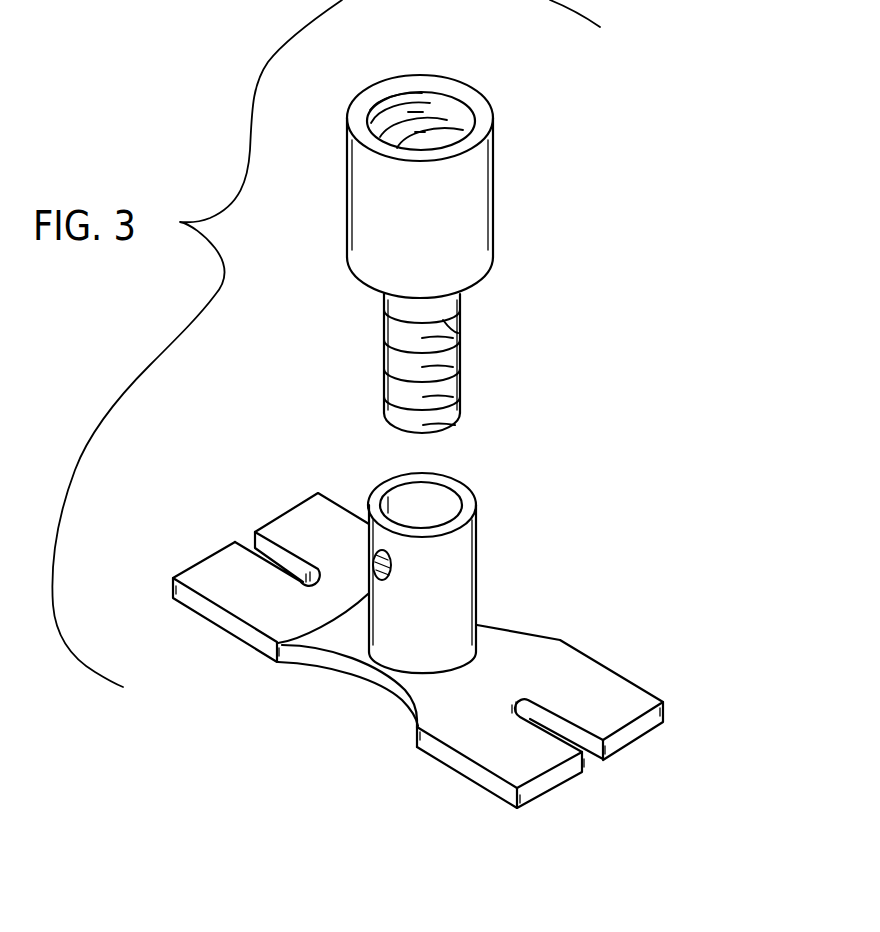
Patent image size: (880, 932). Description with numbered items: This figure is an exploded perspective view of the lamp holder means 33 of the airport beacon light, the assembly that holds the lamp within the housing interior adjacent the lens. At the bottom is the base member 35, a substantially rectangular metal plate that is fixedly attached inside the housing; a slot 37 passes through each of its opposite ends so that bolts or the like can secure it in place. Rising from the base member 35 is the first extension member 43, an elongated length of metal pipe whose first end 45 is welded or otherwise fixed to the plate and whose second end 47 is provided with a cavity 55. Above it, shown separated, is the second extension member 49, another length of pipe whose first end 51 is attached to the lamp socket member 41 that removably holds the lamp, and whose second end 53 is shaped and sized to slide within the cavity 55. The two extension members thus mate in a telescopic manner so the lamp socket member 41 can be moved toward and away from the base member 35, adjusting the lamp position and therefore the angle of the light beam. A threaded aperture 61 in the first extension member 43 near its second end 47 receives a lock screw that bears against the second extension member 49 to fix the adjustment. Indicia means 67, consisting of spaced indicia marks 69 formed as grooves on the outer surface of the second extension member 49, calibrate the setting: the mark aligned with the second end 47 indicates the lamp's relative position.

The lamp holder means 33 is at (727, 127).
The base member 35 is at (439, 647).
The slot 37 is at (267, 540).
The lamp socket member 41 is at (461, 293).
The first extension member 43 is at (390, 601).
The first end of first extension member 45 is at (437, 657).
The second end of first extension member 47 is at (458, 537).
The second extension member 49 is at (428, 353).
The first end of second extension member 51 is at (395, 300).
The second end of second extension member 53 is at (403, 418).
The cavity 55 is at (458, 497).
The threaded aperture 61 is at (376, 583).
The indicia means 67 is at (492, 397).
The indicia marks 69 is at (462, 403).